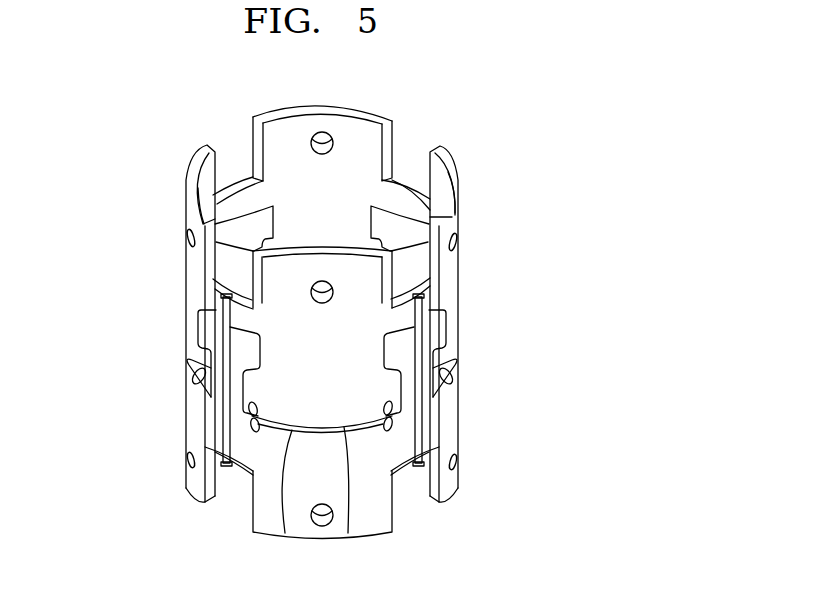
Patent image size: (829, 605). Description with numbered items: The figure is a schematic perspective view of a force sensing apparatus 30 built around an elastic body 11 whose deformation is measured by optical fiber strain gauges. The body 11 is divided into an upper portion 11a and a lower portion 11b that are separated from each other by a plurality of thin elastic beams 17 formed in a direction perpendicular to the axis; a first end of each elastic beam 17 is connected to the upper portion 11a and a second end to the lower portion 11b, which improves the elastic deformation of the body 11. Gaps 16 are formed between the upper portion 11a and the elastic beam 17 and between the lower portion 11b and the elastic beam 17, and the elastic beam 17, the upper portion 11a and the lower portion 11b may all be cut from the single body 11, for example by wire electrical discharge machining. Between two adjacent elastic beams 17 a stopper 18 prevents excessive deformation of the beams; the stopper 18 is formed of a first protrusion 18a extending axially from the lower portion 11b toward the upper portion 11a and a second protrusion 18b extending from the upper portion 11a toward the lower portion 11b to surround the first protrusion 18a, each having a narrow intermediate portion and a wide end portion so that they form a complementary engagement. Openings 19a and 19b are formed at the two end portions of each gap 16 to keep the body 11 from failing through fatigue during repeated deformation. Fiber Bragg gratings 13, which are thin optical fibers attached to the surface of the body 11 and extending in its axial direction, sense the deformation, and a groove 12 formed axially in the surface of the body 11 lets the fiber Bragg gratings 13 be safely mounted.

The force sensing apparatus 30 is at (466, 128).
The body 11 is at (453, 184).
The upper portion 11a is at (380, 280).
The lower portion 11b is at (377, 527).
The groove 12 is at (447, 309).
The fiber Bragg grating 13 is at (421, 424).
The gap 16 is at (285, 533).
The elastic beam 17 is at (348, 533).
The stopper 18 is at (129, 309).
The first protrusion 18a is at (207, 321).
The second protrusion 18b is at (211, 355).
The opening 19a is at (253, 432).
The opening 19b is at (388, 412).